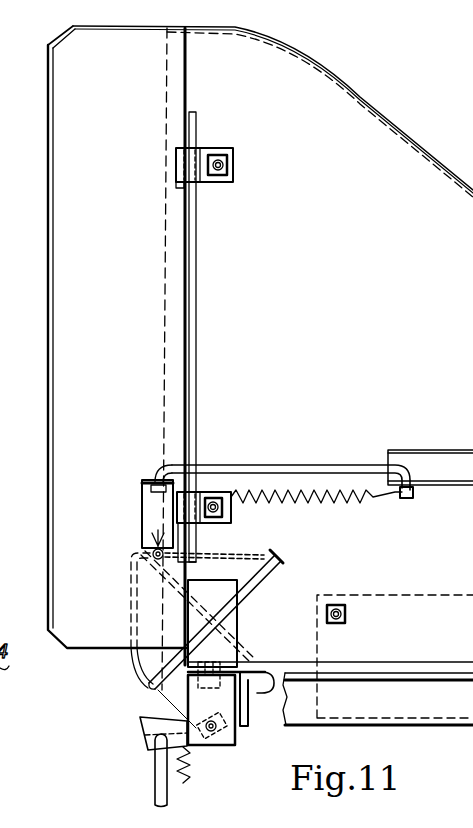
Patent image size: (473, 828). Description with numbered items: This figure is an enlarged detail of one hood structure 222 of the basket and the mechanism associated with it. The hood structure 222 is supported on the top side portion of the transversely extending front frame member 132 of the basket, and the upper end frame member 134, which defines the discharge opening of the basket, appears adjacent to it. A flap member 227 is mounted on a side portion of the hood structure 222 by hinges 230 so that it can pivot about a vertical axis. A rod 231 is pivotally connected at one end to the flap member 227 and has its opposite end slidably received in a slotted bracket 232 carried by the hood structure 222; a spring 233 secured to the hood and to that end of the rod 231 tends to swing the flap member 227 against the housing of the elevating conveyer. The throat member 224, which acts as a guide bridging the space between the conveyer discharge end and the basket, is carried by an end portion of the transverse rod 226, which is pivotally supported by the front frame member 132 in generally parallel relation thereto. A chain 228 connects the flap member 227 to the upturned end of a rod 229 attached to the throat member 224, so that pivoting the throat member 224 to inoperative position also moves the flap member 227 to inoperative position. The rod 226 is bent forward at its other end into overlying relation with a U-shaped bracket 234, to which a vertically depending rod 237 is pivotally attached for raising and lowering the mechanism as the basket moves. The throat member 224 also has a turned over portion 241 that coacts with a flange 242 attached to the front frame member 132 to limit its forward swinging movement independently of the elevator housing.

The hood structure 222 is at (456, 124).
The flap member 227 is at (60, 319).
The hinge 230 is at (218, 151).
The rod 231 is at (306, 469).
The slotted bracket 232 is at (445, 440).
The spring 233 is at (340, 502).
The chain 228 is at (247, 554).
The rod 229 is at (258, 589).
The throat member 224 is at (130, 665).
The turned over portion 241 is at (274, 672).
The flange 242 is at (256, 693).
The front frame member 132 is at (244, 720).
The upper end frame member 134 is at (408, 723).
The U-shaped bracket 234 is at (145, 738).
The rod 237 is at (155, 778).
The transverse rod 226 is at (212, 736).